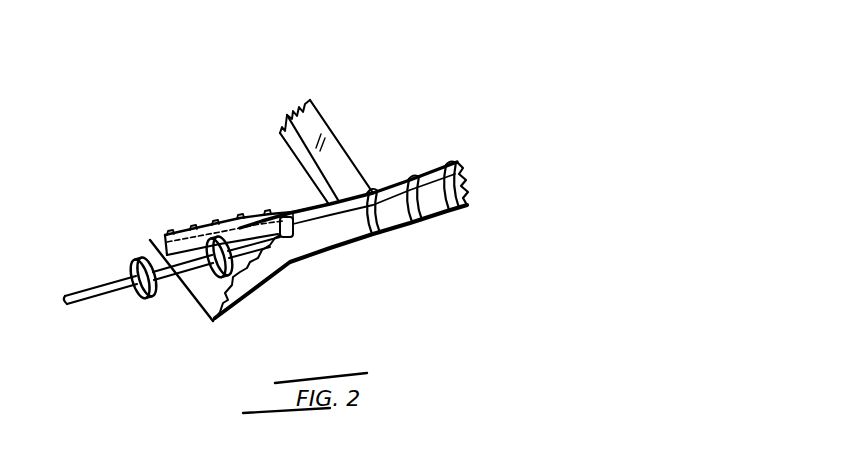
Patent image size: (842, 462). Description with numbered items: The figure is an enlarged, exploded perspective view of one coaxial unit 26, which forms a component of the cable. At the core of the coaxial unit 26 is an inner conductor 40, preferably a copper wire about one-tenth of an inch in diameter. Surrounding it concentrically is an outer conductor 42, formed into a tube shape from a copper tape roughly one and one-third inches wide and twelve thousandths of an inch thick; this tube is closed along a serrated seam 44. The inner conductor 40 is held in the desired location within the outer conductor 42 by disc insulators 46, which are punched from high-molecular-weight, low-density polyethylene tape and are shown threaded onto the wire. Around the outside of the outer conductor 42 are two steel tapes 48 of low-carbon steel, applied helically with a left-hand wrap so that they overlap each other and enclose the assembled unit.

The coaxial unit 26 is at (448, 132).
The inner conductor 40 is at (88, 289).
The outer conductor 42 is at (193, 300).
The serrated seam 44 is at (367, 190).
The disc insulators 46 is at (205, 243).
The steel tapes 48 is at (282, 133).